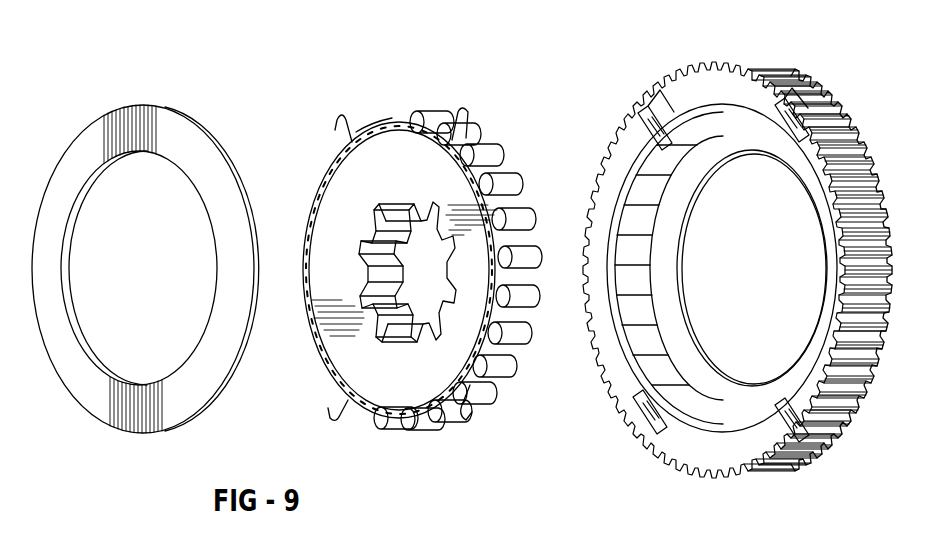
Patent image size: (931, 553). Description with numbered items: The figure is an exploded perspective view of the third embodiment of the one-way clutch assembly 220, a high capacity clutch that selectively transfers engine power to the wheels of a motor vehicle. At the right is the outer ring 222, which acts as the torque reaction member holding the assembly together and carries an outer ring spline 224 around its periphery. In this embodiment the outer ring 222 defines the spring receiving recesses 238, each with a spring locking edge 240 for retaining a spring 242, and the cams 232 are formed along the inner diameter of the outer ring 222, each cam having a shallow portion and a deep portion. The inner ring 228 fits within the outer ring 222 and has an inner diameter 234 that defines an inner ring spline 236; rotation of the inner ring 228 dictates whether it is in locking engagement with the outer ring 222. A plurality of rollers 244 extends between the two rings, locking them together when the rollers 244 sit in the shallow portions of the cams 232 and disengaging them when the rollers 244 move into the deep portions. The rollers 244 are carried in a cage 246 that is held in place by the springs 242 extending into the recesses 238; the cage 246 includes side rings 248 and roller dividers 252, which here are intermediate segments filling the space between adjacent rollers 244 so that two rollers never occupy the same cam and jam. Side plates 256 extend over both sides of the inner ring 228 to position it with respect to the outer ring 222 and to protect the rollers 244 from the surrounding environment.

The clutch assembly 220 is at (456, 92).
The outer ring 222 is at (690, 478).
The outer ring spline 224 is at (800, 73).
The inner ring 228 is at (308, 220).
The cams 232 is at (665, 230).
The inner diameter 234 is at (398, 307).
The inner ring spline 236 is at (403, 252).
The spring receiving recesses 238 is at (641, 114).
The spring locking edge 240 is at (660, 122).
The springs 242 is at (338, 133).
The rollers 244 is at (430, 110).
The cage 246 is at (371, 128).
The side rings 248 is at (411, 433).
The roller dividers 252 is at (504, 136).
The side plates 256 is at (80, 402).